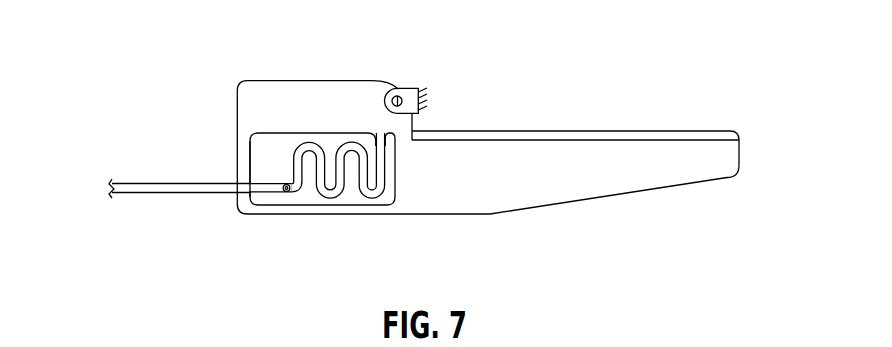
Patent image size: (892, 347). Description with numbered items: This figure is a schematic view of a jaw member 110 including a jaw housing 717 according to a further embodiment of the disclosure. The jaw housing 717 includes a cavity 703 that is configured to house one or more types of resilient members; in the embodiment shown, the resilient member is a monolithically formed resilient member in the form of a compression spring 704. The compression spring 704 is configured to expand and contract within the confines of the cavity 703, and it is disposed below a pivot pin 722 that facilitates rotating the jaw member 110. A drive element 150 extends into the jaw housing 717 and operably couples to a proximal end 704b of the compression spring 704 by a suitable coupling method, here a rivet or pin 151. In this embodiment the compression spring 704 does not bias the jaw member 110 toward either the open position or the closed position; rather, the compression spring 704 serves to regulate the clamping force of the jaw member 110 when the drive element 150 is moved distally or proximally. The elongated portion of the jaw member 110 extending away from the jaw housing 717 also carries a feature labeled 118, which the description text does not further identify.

The jaw member 110 is at (638, 102).
The top plate 118 is at (712, 135).
The drive element 150 is at (137, 184).
The rivet or pin 151 is at (287, 196).
The cavity 703 is at (267, 129).
The compression spring 704 is at (348, 140).
The proximal end 704b is at (301, 190).
The jaw housing 717 is at (727, 178).
The pivot pin 722 is at (400, 88).